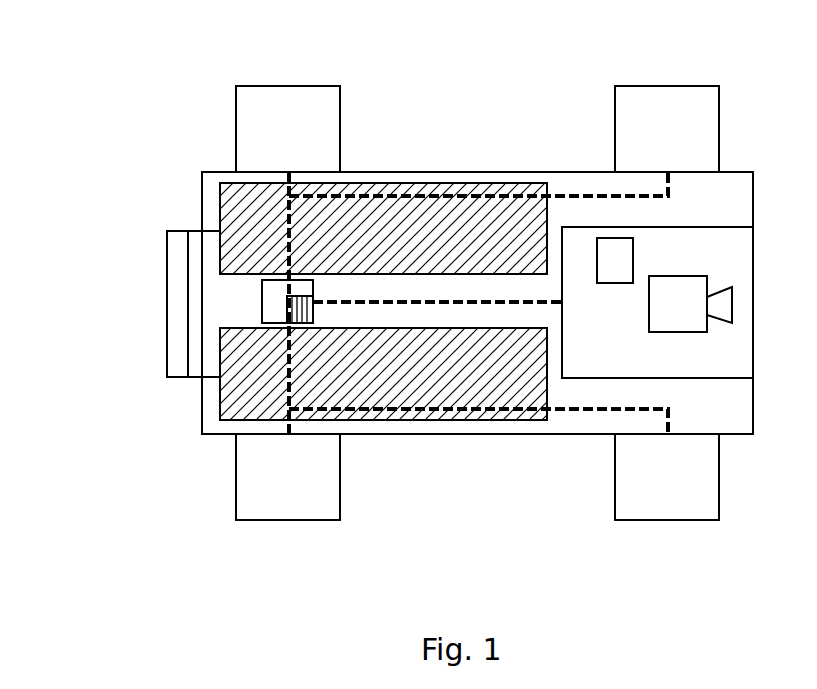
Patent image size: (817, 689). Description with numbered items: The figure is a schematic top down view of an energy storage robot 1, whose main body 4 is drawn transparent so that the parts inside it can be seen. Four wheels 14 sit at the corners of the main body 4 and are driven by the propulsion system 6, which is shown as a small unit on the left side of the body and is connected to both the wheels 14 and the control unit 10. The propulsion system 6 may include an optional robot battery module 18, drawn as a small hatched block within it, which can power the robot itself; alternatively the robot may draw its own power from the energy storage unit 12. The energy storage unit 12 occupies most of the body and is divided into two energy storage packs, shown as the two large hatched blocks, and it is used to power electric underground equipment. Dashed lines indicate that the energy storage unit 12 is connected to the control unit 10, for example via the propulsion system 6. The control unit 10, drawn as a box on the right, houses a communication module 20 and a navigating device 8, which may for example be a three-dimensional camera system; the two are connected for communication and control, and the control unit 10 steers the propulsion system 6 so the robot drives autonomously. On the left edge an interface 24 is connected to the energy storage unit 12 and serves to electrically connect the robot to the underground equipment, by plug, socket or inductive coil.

The energy storage robot 1 is at (483, 116).
The main body 4 is at (562, 172).
The wheels 14 is at (293, 86).
The energy storage unit 12 is at (488, 255).
The interface 24 is at (182, 352).
The propulsion system 6 is at (262, 293).
The robot battery module 18 is at (303, 310).
The control unit 10 is at (728, 225).
The communication module 20 is at (633, 250).
The navigating device 8 is at (687, 332).